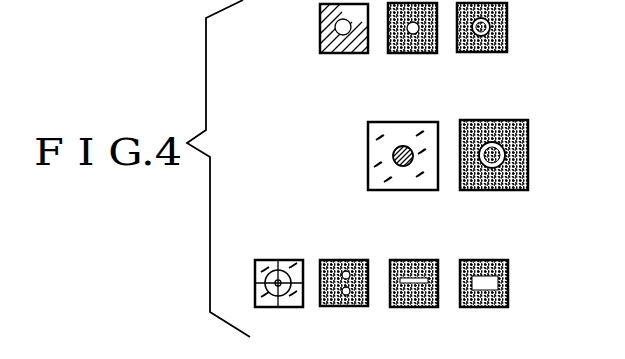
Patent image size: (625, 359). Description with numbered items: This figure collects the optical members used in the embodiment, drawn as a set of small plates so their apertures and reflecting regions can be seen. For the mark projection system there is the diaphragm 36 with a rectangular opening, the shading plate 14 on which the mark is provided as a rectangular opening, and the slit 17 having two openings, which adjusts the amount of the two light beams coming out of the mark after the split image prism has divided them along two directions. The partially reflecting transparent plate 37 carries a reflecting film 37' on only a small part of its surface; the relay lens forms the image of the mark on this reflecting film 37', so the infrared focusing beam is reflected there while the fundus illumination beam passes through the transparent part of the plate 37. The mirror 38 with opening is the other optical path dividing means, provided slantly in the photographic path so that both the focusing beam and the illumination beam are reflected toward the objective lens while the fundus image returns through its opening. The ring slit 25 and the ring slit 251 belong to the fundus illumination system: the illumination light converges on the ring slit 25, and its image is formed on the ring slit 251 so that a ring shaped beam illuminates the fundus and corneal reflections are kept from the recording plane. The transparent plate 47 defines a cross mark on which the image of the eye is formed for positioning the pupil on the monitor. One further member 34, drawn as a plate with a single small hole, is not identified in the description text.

The mirror with opening 38 is at (345, 55).
The stippled square element with small hole 34 is at (414, 55).
The ring slit 251 is at (486, 54).
The partially reflecting transparent plate 37 is at (403, 178).
The reflecting film 37' is at (373, 152).
The ring slit 25 is at (496, 191).
The transparent plate defining a cross mark 47 is at (285, 308).
The slit with two openings 17 is at (345, 307).
The shading plate 14 is at (415, 307).
The diaphragm with a rectangular opening 36 is at (484, 308).